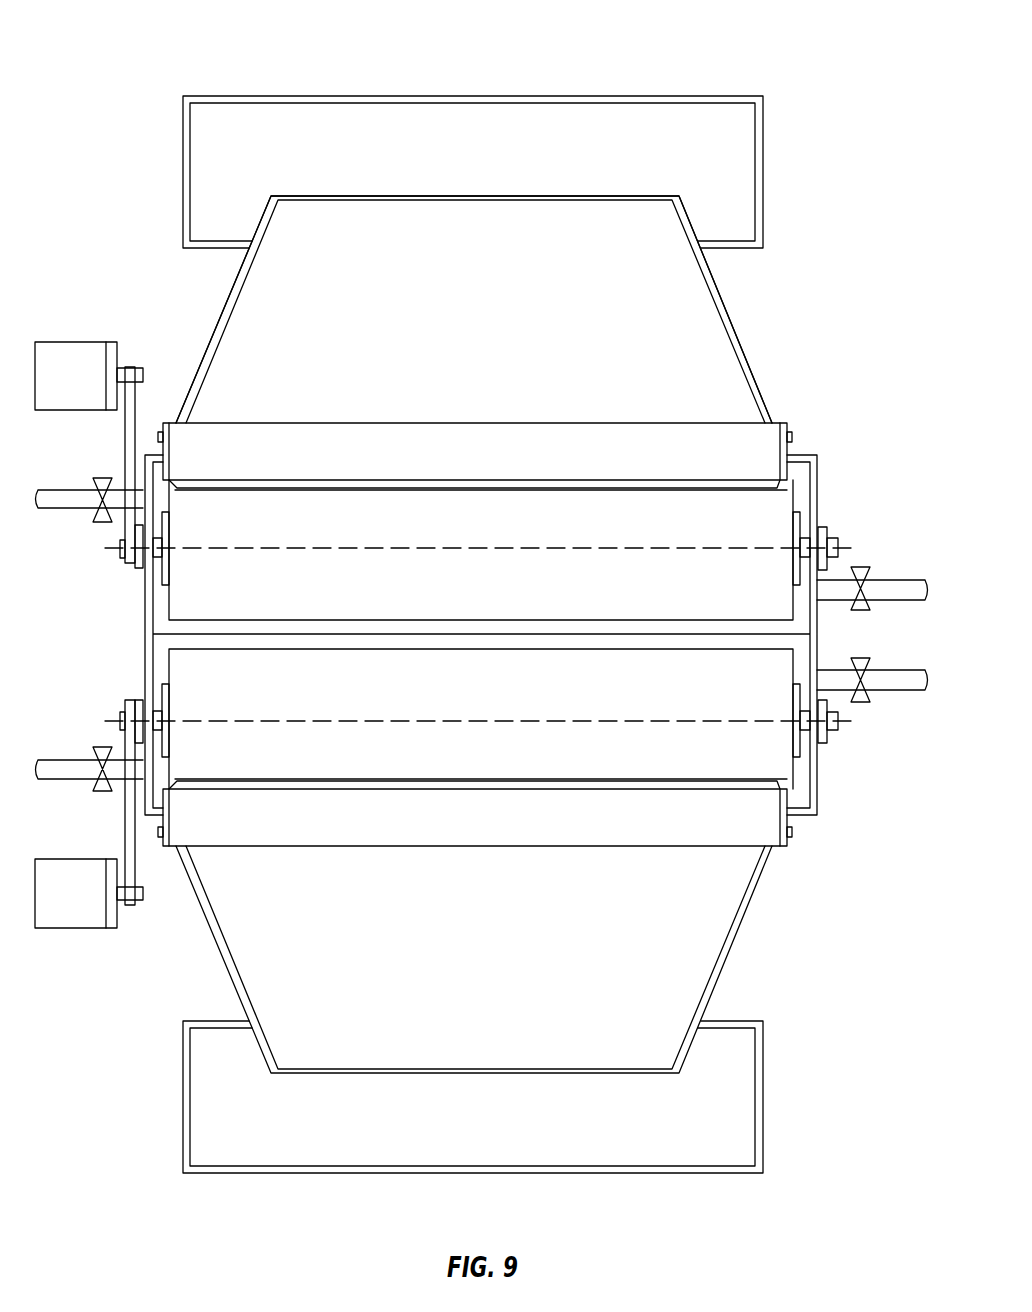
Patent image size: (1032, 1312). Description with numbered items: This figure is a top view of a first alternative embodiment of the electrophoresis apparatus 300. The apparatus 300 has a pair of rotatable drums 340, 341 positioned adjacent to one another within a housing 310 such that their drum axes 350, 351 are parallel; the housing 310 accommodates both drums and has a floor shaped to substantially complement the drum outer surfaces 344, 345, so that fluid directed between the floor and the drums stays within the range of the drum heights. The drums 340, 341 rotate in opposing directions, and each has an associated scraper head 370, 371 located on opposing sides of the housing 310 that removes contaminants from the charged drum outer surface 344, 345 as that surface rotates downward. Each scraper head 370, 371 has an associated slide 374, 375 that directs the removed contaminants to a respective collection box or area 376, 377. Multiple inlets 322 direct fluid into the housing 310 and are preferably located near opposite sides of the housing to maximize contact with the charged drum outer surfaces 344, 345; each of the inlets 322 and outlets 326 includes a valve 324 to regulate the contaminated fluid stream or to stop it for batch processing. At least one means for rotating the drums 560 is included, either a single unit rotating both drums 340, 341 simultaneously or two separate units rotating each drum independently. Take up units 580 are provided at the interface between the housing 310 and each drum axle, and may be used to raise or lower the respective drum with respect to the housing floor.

The apparatus 300 is at (135, 46).
The housing 310 is at (805, 455).
The inlets 322 is at (75, 488).
The valve 324 is at (100, 522).
The outlets 326 is at (893, 580).
The rotatable drum 340 is at (763, 508).
The rotatable drum 341 is at (765, 762).
The drum outer surface 344 is at (503, 530).
The drum outer surface 345 is at (503, 771).
The drum axis 350 is at (633, 548).
The drum axis 351 is at (633, 721).
The scraper head 370 is at (652, 450).
The scraper head 371 is at (655, 818).
The slide 374 is at (705, 318).
The slide 375 is at (705, 948).
The collection box 376 is at (742, 175).
The collection box 377 is at (742, 1095).
The means for rotating the drums 560 is at (70, 342).
The take up unit 580 is at (835, 528).